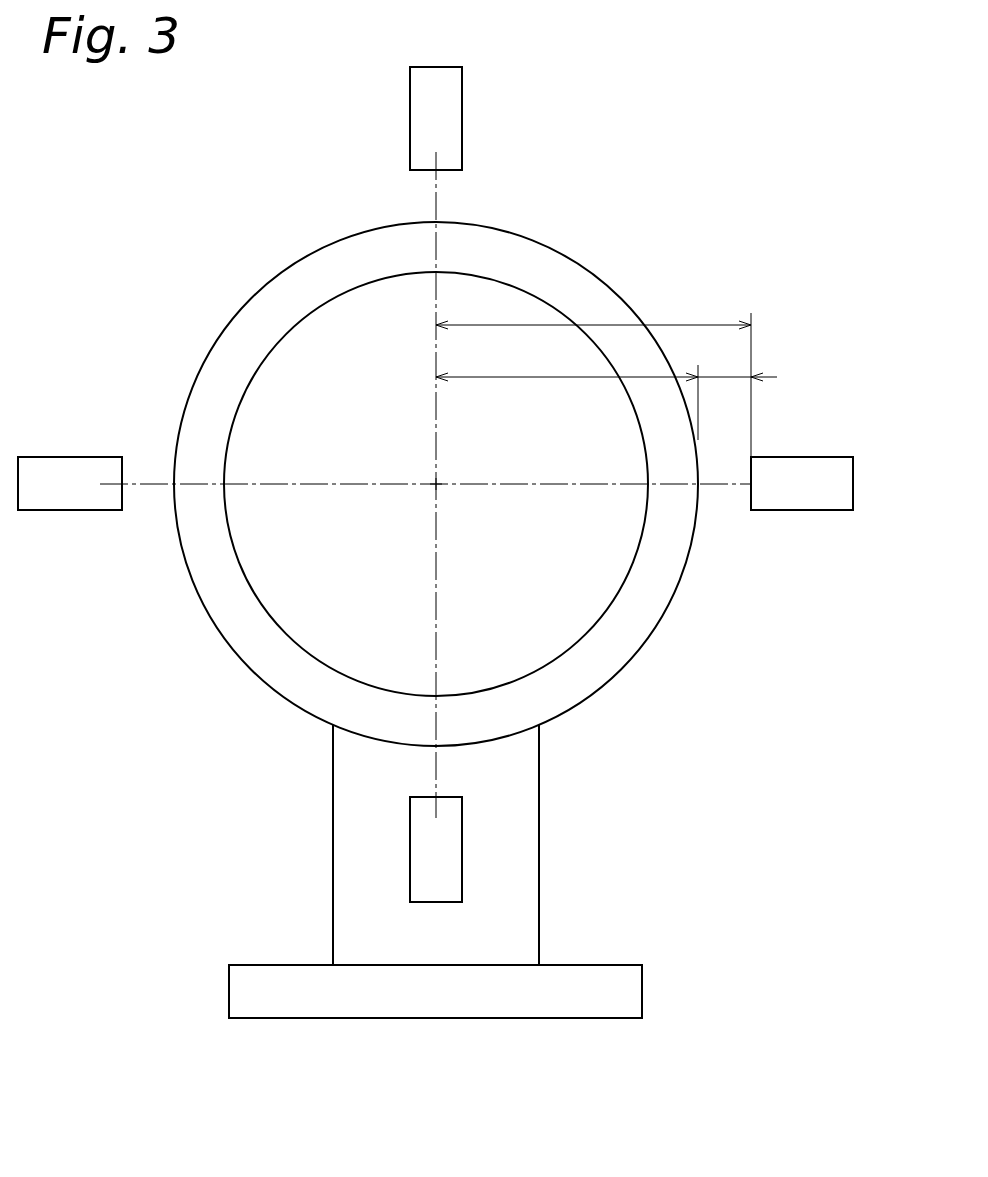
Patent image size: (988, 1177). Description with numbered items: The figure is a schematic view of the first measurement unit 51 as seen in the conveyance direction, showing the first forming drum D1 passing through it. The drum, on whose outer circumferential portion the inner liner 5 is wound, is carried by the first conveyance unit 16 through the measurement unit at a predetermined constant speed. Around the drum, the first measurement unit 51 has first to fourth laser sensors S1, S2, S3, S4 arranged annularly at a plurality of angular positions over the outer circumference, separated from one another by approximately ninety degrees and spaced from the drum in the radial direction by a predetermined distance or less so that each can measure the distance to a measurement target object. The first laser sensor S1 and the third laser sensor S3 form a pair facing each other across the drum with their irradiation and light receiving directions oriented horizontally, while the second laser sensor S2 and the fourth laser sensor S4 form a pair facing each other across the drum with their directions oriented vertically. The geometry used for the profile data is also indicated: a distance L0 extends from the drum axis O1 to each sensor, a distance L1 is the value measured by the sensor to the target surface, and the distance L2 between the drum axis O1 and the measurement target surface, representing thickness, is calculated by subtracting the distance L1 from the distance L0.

The first measurement unit 51 is at (439, 402).
The inner liner 5 is at (633, 622).
The first forming drum D1 is at (255, 590).
The drum axis O1 is at (436, 486).
The first conveyance unit 16 is at (539, 893).
The first laser sensor S1 is at (812, 498).
The second laser sensor S2 is at (448, 131).
The third laser sensor S3 is at (82, 498).
The fourth laser sensor S4 is at (448, 862).
The distance between drum axis and sensor L0 is at (593, 312).
The distance measured by sensor L1 is at (737, 364).
The distance between drum axis and measurement target surface L2 is at (567, 364).